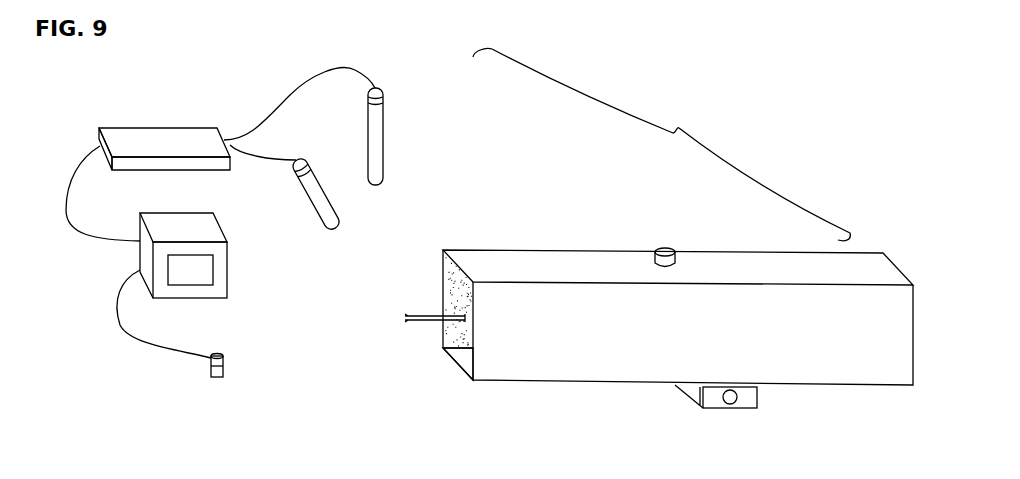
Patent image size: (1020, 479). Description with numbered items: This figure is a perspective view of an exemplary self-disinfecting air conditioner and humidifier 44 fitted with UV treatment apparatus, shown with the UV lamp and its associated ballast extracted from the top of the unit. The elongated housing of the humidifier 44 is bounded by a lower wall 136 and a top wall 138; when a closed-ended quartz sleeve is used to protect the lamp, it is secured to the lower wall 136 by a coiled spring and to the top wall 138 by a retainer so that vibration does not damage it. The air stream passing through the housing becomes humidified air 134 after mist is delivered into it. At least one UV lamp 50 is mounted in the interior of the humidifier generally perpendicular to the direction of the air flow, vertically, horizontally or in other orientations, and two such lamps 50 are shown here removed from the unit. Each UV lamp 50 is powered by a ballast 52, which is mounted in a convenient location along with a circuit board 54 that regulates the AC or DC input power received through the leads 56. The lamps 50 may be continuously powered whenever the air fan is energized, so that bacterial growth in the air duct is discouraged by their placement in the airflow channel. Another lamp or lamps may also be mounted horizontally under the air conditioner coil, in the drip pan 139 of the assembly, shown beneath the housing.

The self-disinfecting air conditioner and humidifier 44 is at (661, 144).
The UV lamp 50 is at (385, 132).
The ballast 52 is at (130, 125).
The circuit board 54 is at (133, 257).
The leads 56 is at (202, 365).
The humidified air 134 is at (408, 318).
The lower wall 136 is at (463, 358).
The top wall 138 is at (520, 263).
The drip pan 139 is at (728, 412).